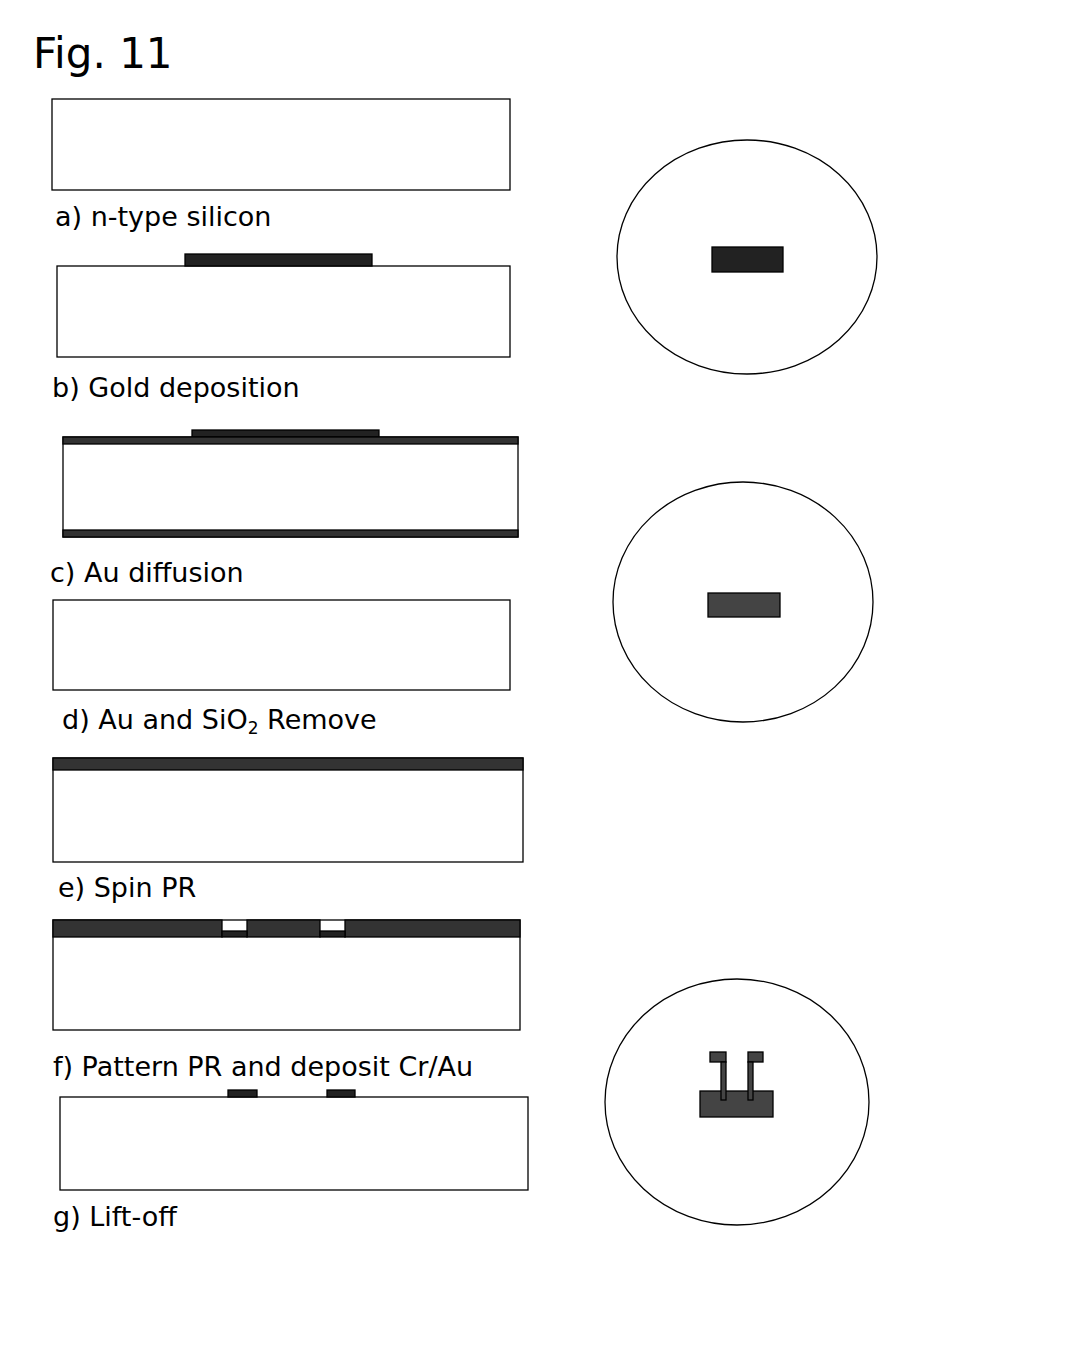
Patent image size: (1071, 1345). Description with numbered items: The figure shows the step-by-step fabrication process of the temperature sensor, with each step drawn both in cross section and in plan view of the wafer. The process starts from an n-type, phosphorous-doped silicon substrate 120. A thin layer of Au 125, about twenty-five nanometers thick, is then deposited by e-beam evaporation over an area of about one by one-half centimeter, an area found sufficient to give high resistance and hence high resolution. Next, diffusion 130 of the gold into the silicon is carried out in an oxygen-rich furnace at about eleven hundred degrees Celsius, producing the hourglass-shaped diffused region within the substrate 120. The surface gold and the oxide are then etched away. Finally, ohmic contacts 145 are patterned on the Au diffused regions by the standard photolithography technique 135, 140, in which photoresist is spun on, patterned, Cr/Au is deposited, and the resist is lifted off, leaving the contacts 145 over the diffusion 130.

The n-type silicon substrate 120 is at (510, 120).
The Au 125 is at (372, 258).
The diffusion 130 is at (357, 473).
The photolithography technique 135 is at (523, 770).
The photolithography technique 140 is at (520, 922).
The ohmic contacts 145 is at (253, 1097).